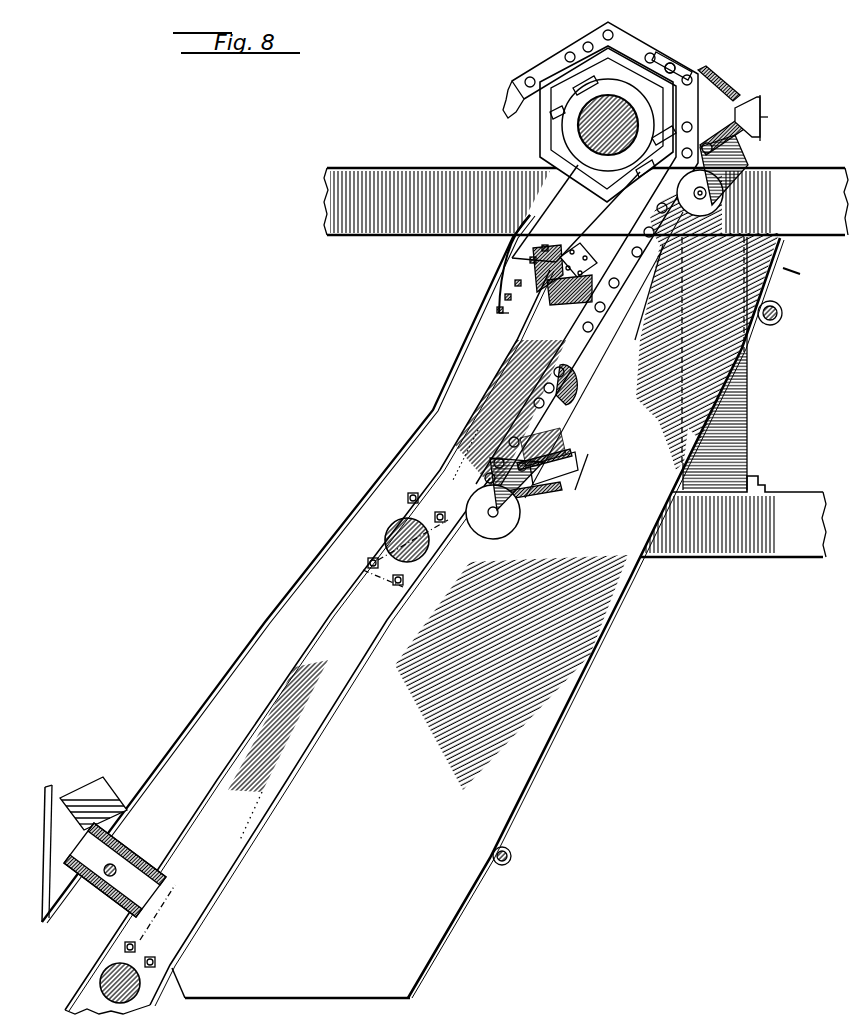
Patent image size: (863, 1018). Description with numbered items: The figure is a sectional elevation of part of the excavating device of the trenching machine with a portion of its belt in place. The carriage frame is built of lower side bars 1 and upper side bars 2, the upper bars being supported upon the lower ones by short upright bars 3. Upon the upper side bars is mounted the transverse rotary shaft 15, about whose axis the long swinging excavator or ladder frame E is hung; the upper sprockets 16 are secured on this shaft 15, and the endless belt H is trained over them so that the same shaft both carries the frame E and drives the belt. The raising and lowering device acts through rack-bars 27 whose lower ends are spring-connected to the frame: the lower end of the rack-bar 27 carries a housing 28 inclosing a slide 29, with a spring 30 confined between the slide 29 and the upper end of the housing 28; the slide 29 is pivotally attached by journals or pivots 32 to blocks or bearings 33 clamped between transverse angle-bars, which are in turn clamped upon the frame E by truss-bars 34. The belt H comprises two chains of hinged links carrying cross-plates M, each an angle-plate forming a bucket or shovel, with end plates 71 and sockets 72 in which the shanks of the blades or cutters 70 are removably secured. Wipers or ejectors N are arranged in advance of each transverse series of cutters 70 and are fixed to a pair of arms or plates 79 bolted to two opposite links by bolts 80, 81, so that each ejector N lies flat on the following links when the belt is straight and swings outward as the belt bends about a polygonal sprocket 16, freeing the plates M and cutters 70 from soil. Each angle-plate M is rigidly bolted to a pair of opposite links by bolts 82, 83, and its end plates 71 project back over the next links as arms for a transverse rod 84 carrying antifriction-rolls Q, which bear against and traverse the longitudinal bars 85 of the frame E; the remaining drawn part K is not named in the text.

The lower side bars 1 is at (806, 503).
The upper side bars 2 is at (586, 201).
The upright bars 3 is at (748, 399).
The rotary shaft 15 is at (578, 127).
The upper sprockets 16 is at (594, 154).
The rack-bars 27 is at (45, 787).
The housing 28 is at (86, 791).
The slide 29 is at (117, 870).
The spring 30 is at (73, 800).
The journals or pivots 32 is at (108, 878).
The blocks or bearings 33 is at (132, 868).
The truss-bars 34 is at (288, 569).
The blades or cutters 70 is at (655, 292).
The end plates 71 is at (735, 153).
The sockets 72 is at (718, 130).
The arms or plates 79 is at (669, 63).
The bolt 80 is at (652, 52).
The bolt 81 is at (676, 70).
The bolt 82 is at (512, 447).
The bolt 83 is at (500, 462).
The transversely-arranged rod 84 is at (487, 557).
The longitudinal bars 85 is at (309, 642).
The endless belt H is at (557, 60).
The wipers or ejectors N is at (708, 79).
The cross-plates M is at (762, 137).
The antifriction-rolls Q is at (531, 545).
The excavator or ladder frame E is at (233, 635).
The trough K is at (478, 586).